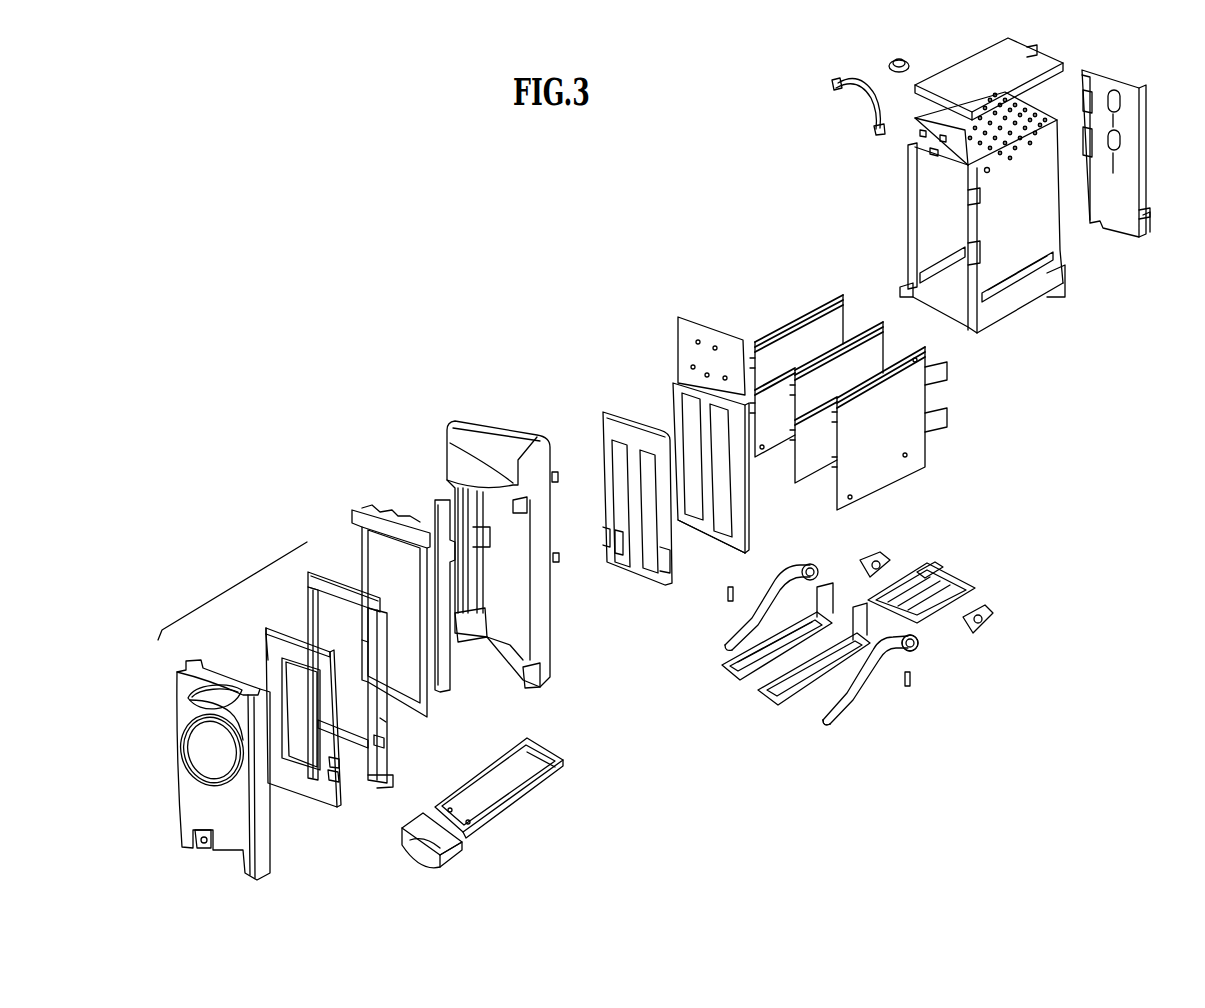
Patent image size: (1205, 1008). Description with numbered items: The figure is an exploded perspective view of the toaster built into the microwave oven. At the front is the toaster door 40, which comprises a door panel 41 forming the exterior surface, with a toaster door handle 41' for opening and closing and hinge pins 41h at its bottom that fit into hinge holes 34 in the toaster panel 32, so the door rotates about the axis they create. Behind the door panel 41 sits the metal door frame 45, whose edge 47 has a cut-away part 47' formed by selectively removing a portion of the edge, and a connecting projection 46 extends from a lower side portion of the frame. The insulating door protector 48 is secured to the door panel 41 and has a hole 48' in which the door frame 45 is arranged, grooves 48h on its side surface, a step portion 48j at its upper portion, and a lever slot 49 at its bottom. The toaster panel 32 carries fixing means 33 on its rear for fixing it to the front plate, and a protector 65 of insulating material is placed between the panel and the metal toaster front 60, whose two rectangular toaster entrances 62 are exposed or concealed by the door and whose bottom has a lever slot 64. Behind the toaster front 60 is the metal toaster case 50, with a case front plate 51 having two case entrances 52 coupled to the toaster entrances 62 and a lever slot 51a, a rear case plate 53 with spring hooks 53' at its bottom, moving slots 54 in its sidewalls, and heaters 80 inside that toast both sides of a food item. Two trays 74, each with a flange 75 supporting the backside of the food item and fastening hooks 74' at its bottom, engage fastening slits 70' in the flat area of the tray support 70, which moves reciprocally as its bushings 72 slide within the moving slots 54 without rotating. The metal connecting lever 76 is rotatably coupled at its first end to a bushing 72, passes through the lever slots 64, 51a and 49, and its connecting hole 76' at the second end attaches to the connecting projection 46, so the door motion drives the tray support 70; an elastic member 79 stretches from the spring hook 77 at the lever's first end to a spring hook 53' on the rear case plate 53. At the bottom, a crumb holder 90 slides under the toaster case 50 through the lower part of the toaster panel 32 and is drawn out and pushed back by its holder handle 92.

The toaster door 40 is at (226, 596).
The door panel 41 is at (196, 770).
The toaster door handle 41' is at (185, 698).
The hinge pins 41h is at (207, 849).
The edge 47 is at (291, 691).
The cut-away part 47' is at (227, 642).
The door frame 45 is at (338, 797).
The connecting projection 46 is at (334, 773).
The step portion 48j is at (319, 573).
The hole 48' is at (350, 687).
The door protector 48 is at (409, 616).
The grooves 48h is at (380, 640).
The lever slot 49 is at (381, 747).
The toaster panel 32 is at (540, 595).
The fixing means 33 is at (558, 472).
The hinge holes 34 is at (526, 689).
The protector 65 is at (437, 540).
The toaster front 60 is at (622, 428).
The toaster entrances 62 is at (648, 503).
The lever slot 64 is at (603, 537).
The case front plate 51 is at (690, 327).
The case entrances 52 is at (688, 413).
The lever slot 51a is at (740, 527).
The heaters 80 is at (793, 330).
The toaster case 50 is at (1018, 240).
The moving slots 54 is at (1030, 280).
The rear case plate 53 is at (1141, 153).
The spring hooks 53' is at (1163, 253).
The tray support 70 is at (951, 593).
The fastening slits 70' is at (947, 550).
The bushing 72 is at (887, 553).
The tray 74 is at (757, 655).
The fastening hooks 74' is at (803, 679).
The flange 75 is at (823, 590).
The connecting lever 76 is at (802, 649).
The connecting hole 76' is at (809, 744).
The spring hook 77 is at (918, 650).
The elastic member 79 is at (912, 677).
The crumb holder 90 is at (507, 810).
The holder handle 92 is at (415, 857).